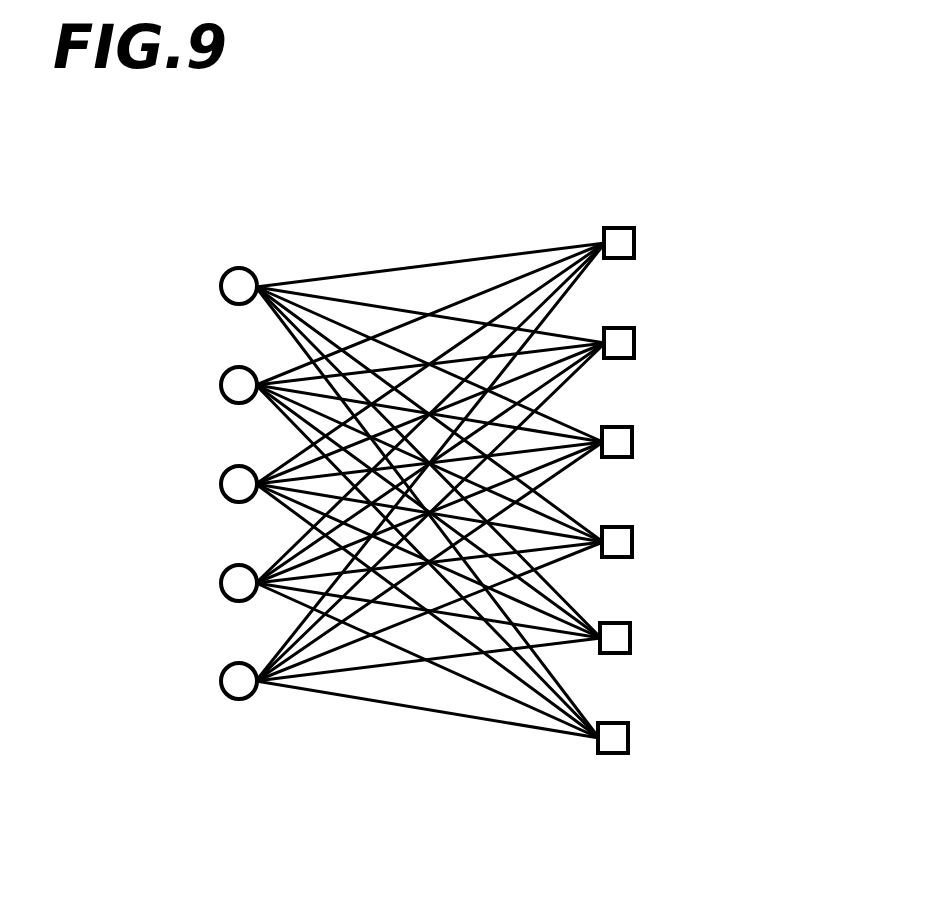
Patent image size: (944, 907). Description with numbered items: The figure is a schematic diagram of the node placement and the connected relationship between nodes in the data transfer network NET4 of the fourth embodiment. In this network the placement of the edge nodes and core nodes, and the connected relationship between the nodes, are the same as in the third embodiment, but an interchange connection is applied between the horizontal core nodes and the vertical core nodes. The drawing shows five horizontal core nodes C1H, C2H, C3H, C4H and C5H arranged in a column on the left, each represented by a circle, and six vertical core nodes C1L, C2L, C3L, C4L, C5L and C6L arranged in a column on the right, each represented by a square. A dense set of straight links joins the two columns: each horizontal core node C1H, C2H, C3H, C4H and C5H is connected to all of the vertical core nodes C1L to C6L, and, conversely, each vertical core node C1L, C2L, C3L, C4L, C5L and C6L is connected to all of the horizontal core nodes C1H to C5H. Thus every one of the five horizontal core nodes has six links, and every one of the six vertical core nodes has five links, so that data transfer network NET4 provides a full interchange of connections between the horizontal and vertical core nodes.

The data transfer network NET4 is at (846, 184).
The horizontal core node C1H is at (218, 289).
The horizontal core node C2H is at (218, 387).
The horizontal core node C3H is at (218, 486).
The horizontal core node C4H is at (218, 585).
The horizontal core node C5H is at (218, 683).
The vertical core node C1L is at (636, 243).
The vertical core node C2L is at (636, 343).
The vertical core node C3L is at (634, 442).
The vertical core node C4L is at (634, 542).
The vertical core node C5L is at (632, 638).
The vertical core node C6L is at (630, 738).